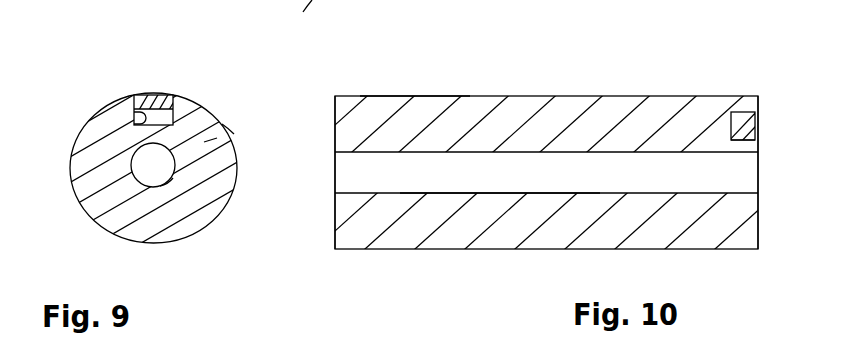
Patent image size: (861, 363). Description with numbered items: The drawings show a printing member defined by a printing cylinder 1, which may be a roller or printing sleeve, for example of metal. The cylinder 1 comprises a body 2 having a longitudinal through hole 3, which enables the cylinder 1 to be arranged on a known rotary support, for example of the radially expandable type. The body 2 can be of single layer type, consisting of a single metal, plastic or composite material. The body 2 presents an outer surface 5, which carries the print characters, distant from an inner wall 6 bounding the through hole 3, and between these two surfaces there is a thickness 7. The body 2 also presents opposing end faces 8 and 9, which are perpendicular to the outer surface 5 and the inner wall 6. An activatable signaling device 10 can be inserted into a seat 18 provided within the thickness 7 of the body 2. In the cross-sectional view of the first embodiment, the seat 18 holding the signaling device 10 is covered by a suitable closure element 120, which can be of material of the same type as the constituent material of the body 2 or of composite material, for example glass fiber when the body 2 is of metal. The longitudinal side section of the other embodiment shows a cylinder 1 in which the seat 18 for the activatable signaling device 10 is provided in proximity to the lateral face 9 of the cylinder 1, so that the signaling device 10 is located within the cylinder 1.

In FIG. 9, the printing cylinder 1 is at (107, 92).
In FIG. 10, the printing cylinder 1 is at (759, 252).
In FIG. 9, the body 2 is at (260, 126).
In FIG. 10, the body 2 is at (320, 230).
In FIG. 9, the longitudinal through hole 3 is at (147, 165).
In FIG. 10, the longitudinal through hole 3 is at (417, 173).
In FIG. 9, the outer surface 5 is at (212, 108).
In FIG. 10, the outer surface 5 is at (463, 95).
In FIG. 9, the inner wall 6 is at (168, 181).
In FIG. 10, the inner wall 6 is at (500, 187).
In FIG. 9, the thickness 7 is at (228, 133).
In FIG. 10, the thickness 7 is at (373, 120).
In FIG. 10, the end face 8 is at (335, 108).
In FIG. 10, the end face 9 is at (758, 168).
In FIG. 9, the activatable signaling device 10 is at (156, 104).
In FIG. 10, the activatable signaling device 10 is at (743, 120).
In FIG. 9, the seat 18 is at (133, 124).
In FIG. 10, the seat 18 is at (745, 138).
In FIG. 9, the closure element 120 is at (160, 98).